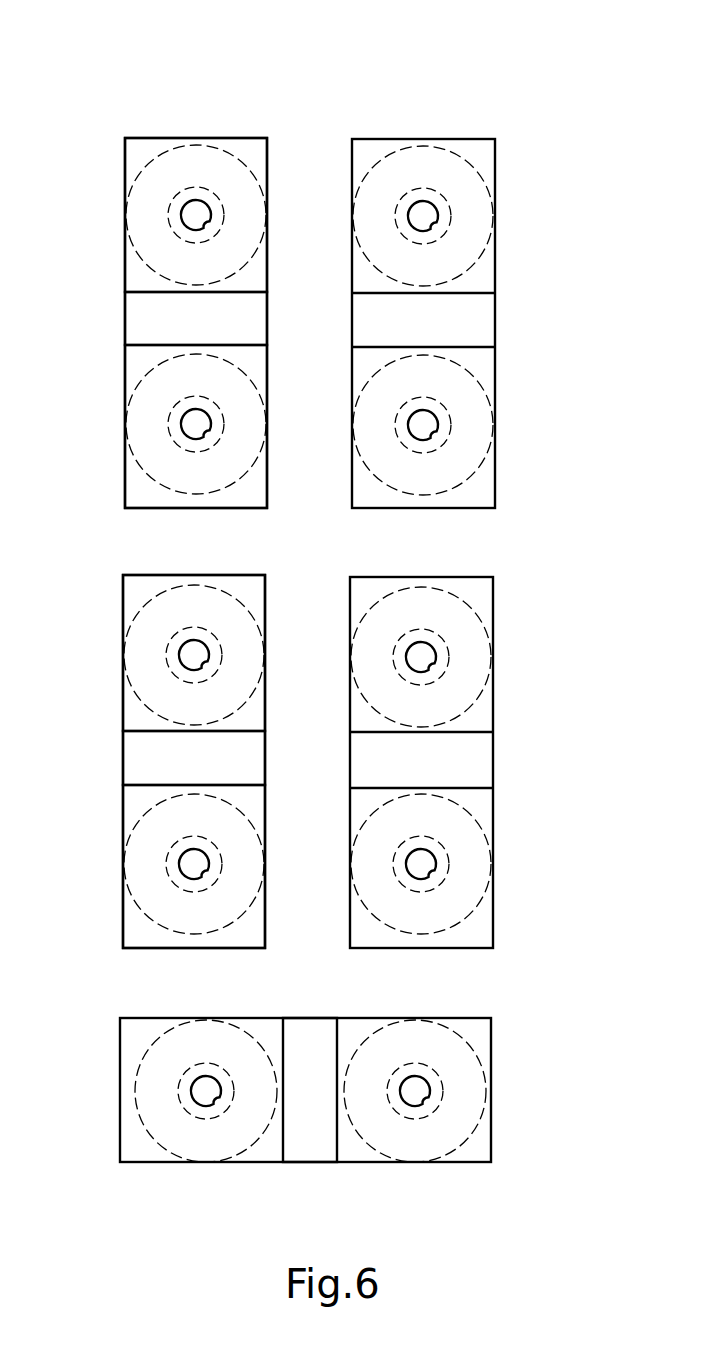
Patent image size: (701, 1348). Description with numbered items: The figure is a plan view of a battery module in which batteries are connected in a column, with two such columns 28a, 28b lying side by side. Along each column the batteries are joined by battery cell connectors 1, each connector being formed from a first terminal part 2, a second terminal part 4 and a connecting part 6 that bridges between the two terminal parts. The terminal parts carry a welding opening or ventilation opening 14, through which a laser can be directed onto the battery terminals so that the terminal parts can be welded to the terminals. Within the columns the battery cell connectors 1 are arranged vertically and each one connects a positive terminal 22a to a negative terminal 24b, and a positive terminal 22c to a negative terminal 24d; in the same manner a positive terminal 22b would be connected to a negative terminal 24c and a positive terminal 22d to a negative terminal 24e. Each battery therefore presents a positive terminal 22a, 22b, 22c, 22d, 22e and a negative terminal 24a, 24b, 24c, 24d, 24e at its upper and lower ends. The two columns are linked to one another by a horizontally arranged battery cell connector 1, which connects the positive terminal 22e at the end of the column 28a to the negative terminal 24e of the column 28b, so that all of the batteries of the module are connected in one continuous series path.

The battery cell connector 1 is at (115, 131).
The first terminal part 2 is at (133, 155).
The second terminal part 4 is at (140, 495).
The connecting part 6 is at (132, 312).
The welding opening or ventilation opening 14 is at (197, 215).
The positive terminal 22a is at (165, 220).
The positive terminal 22b is at (450, 420).
The positive terminal 22c is at (163, 658).
The positive terminal 22d is at (448, 858).
The positive terminal 22e is at (178, 1092).
The negative terminal 24a is at (450, 205).
The negative terminal 24b is at (167, 433).
The negative terminal 24c is at (448, 642).
The negative terminal 24d is at (165, 873).
The negative terminal 24e is at (440, 1082).
The first column 28a is at (197, 83).
The second column 28b is at (425, 83).